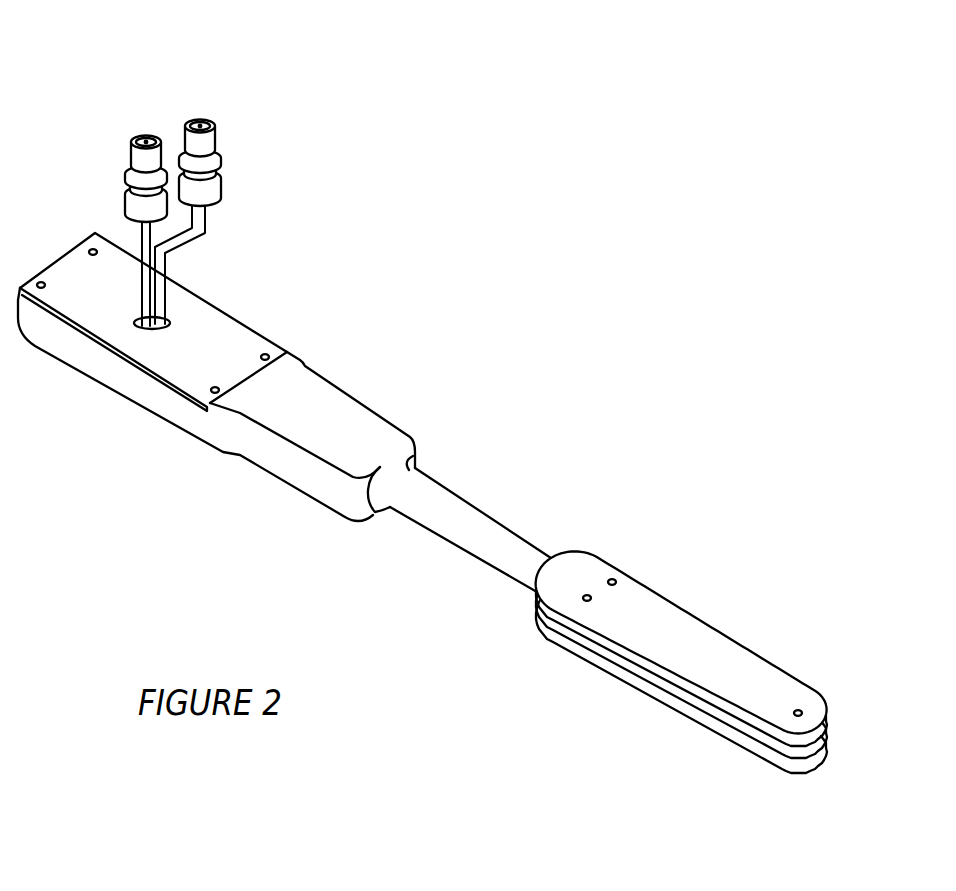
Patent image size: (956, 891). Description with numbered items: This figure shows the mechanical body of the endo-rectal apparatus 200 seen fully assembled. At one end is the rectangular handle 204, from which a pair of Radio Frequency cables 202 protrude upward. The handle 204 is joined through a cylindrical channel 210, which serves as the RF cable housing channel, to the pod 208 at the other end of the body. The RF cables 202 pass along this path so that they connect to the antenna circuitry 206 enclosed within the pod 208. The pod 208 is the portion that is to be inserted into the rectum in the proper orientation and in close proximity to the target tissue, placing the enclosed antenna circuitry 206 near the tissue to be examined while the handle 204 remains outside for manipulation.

The sensor assembly 200 is at (552, 290).
The Radio Frequency (RF) cables 202 is at (145, 137).
The handle 204 is at (207, 337).
The antenna circuitry 206 is at (832, 728).
The pod 208 is at (705, 650).
The channel 210 is at (478, 517).